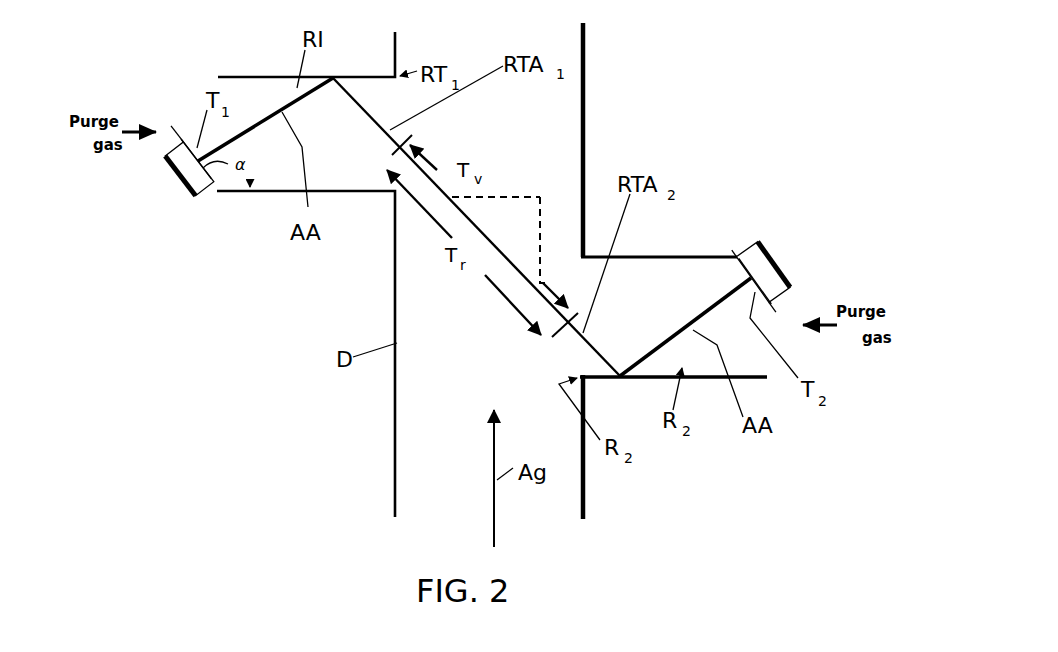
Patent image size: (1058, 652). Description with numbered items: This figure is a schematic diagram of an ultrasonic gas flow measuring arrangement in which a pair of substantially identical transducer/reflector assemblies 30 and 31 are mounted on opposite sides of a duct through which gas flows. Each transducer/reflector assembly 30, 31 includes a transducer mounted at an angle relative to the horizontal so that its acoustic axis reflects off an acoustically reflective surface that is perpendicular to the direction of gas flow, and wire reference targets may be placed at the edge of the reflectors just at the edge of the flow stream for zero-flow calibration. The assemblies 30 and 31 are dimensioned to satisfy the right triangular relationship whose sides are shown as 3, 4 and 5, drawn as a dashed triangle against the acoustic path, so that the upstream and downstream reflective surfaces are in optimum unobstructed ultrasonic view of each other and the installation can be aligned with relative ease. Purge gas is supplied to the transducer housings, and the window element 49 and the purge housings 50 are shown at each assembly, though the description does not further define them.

The transducer/reflector assembly 30 is at (253, 66).
The transducer/reflector assembly 31 is at (713, 208).
The window support line 49 is at (205, 192).
The purge gas window assembly 50 is at (797, 237).
The right triangle side 3 is at (548, 240).
The right triangle side 4 is at (496, 185).
The right triangle side 5 is at (496, 242).